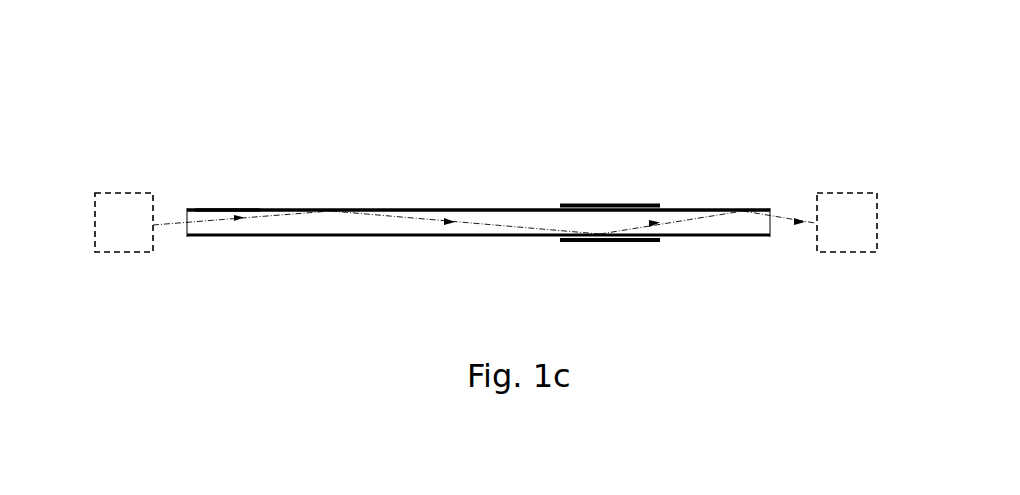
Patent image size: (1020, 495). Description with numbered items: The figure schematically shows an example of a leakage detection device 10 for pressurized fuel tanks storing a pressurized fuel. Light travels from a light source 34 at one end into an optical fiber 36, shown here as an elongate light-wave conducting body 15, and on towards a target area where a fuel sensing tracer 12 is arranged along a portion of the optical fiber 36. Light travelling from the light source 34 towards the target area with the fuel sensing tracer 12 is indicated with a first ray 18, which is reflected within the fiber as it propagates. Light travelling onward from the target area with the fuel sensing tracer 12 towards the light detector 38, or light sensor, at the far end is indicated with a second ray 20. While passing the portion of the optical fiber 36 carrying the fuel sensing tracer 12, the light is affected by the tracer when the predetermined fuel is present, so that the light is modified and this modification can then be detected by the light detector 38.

The optical device 10 is at (500, 181).
The fuel sensing tracer 12 is at (607, 200).
The light guide substrate 15 is at (427, 208).
The first ray 18 is at (240, 217).
The second ray 20 is at (693, 219).
The light source 34 is at (123, 192).
The optical fiber 36 is at (211, 200).
The light detector 38 is at (853, 192).